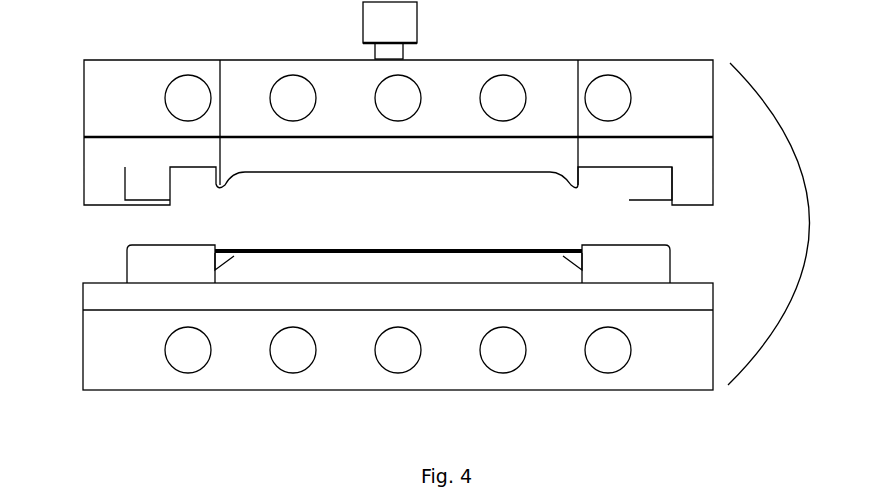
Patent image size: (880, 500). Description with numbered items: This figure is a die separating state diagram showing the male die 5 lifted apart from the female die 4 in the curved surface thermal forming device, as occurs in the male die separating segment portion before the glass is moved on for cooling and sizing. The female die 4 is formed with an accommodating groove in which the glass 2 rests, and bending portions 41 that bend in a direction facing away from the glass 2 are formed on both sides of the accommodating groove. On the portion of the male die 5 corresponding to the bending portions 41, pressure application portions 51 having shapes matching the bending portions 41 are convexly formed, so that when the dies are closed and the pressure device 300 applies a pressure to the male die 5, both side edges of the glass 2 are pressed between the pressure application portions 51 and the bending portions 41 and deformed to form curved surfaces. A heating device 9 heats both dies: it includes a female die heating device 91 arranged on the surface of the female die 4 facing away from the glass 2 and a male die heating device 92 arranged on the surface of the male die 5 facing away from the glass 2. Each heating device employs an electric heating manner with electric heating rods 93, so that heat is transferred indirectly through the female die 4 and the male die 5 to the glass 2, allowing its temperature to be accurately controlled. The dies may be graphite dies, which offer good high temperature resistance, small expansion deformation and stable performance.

The pressure device 300 is at (390, 30).
The heating device 9 is at (426, 220).
The male die heating device 92 is at (702, 107).
The female die heating device 91 is at (702, 347).
The electric heating rod 93 is at (607, 98).
The male die 5 is at (105, 187).
The female die 4 is at (147, 263).
The glass 2 is at (283, 253).
The bending portion 41 is at (235, 257).
The pressure application portion 51 is at (220, 60).